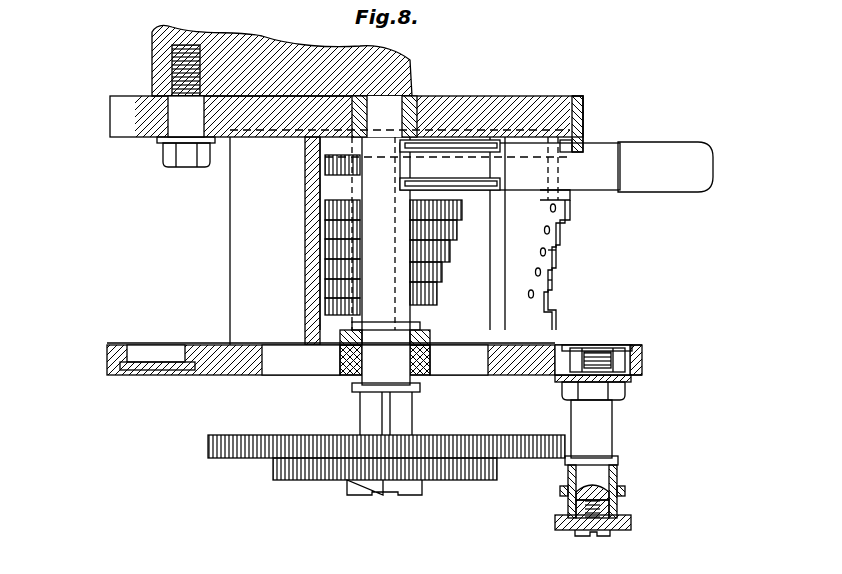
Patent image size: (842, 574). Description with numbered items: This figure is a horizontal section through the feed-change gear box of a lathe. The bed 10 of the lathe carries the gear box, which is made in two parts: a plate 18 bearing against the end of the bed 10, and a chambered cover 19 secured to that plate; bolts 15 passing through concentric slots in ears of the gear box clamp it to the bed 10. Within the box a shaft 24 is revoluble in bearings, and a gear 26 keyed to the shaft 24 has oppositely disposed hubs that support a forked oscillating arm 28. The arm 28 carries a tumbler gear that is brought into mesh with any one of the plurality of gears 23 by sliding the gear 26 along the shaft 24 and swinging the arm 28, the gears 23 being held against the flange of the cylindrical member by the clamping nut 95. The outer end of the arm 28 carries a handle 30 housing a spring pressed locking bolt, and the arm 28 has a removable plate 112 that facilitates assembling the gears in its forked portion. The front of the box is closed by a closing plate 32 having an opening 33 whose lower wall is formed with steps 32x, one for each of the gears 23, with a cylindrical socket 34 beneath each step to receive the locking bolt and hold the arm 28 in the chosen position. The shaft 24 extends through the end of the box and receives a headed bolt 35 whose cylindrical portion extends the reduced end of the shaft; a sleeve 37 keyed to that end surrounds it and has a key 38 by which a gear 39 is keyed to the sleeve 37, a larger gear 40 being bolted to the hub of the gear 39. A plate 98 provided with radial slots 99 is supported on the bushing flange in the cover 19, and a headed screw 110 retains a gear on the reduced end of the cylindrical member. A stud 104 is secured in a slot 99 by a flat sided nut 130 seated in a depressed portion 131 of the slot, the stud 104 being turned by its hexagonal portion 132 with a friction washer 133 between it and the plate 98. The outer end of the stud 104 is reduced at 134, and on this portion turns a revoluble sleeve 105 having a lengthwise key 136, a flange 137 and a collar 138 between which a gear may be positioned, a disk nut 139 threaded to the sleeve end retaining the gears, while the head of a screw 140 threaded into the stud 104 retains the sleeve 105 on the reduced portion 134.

The bed 10 is at (245, 34).
The bolts 15 is at (158, 160).
The plate 18 is at (137, 112).
The chambered cover 19 is at (310, 290).
The plurality of gears 23 is at (450, 250).
The shaft 24 is at (330, 240).
The gear 26 is at (305, 178).
The forked oscillating arm 28 is at (592, 143).
The handle 30 is at (648, 143).
The closing plate 32 is at (585, 106).
The steps 32x is at (558, 292).
The opening 33 is at (572, 240).
The cylindrical socket 34 is at (545, 276).
The headed bolt 35 is at (413, 500).
The sleeve 37 is at (415, 408).
The key 38 is at (378, 408).
The gear 39 is at (450, 484).
The larger gear 40 is at (500, 440).
The clamping nut 95 is at (420, 318).
The plate 98 is at (107, 362).
The radial slots 99 is at (150, 345).
The stud 104 is at (615, 432).
The revoluble sleeve 105 is at (605, 478).
The headed screw 110 is at (358, 500).
The removable plate 112 is at (570, 203).
The flat sided nut 130 is at (608, 350).
The depressed portion 131 is at (642, 352).
The hexagonal portion 132 is at (627, 396).
The friction washer 133 is at (640, 380).
The reduced portion 134 is at (618, 481).
The key 136 is at (568, 488).
The flange 137 is at (622, 460).
The collar 138 is at (562, 497).
The disk nut 139 is at (633, 522).
The screw 140 is at (600, 537).